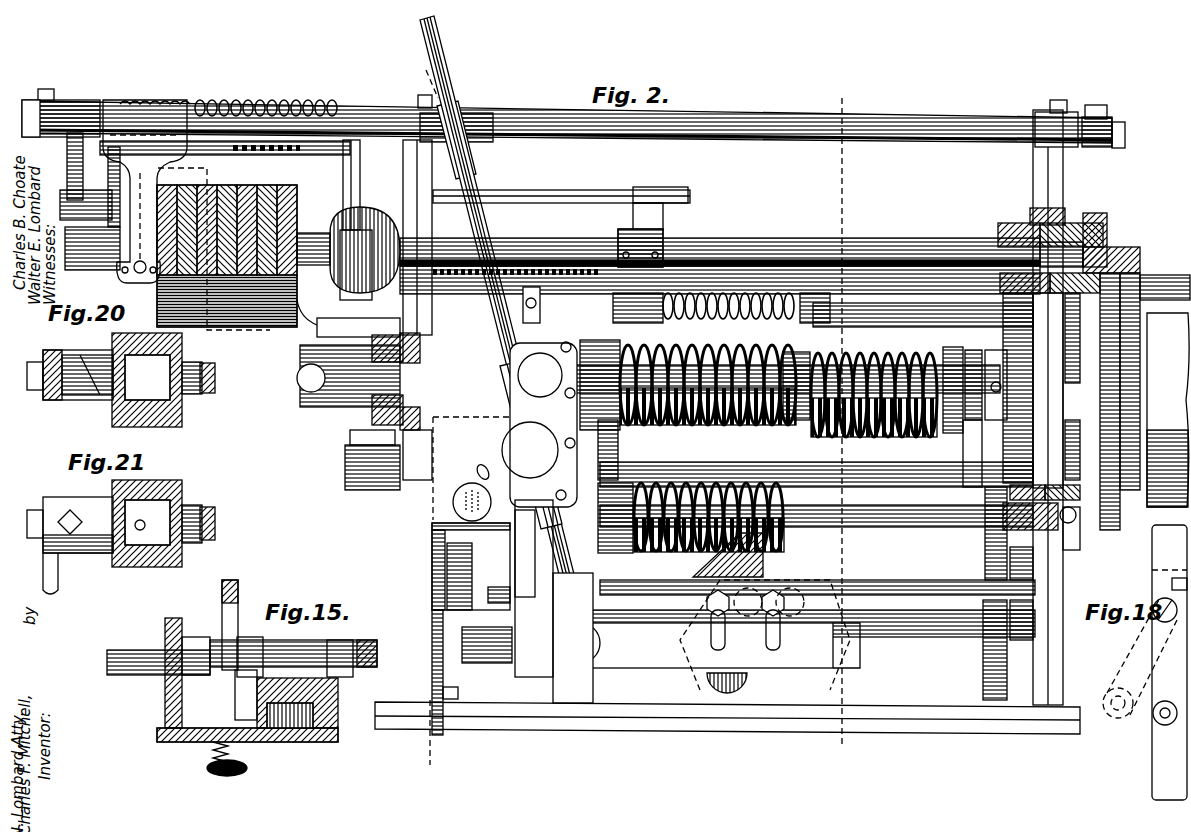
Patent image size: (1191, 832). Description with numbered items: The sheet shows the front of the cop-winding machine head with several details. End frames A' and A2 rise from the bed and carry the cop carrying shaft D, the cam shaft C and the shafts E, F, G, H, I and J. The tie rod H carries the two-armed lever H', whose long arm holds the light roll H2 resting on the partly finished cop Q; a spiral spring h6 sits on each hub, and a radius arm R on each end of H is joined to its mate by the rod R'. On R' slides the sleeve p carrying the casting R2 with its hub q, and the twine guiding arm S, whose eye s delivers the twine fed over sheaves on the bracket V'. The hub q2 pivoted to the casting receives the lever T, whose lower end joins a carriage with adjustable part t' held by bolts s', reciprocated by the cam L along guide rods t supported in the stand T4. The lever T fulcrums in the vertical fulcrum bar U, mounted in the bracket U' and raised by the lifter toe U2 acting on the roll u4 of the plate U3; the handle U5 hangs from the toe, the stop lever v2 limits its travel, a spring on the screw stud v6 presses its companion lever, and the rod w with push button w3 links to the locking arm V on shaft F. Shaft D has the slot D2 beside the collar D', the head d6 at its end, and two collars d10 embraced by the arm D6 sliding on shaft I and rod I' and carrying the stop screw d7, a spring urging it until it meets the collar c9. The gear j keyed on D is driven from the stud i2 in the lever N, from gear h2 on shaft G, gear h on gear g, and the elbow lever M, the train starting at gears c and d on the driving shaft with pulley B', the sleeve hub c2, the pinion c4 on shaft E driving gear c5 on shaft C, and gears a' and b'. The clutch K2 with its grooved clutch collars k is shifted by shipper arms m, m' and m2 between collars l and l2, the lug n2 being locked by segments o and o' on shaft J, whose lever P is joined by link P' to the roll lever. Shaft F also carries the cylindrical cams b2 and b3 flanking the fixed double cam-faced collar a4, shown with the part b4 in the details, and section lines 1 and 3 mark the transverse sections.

In FIG. 2, the tie rod shaft H is at (570, 115).
In FIG. 2, the spiral spring h6 is at (105, 103).
In FIG. 2, the radius arm R is at (58, 109).
In FIG. 2, the connecting rod R' is at (957, 132).
In FIG. 2, the end frame A2 is at (1035, 660).
In FIG. 2, the twine guiding and delivering arm S is at (145, 191).
In FIG. 2, the bolts s' is at (138, 253).
In FIG. 2, the two-armed lever H' is at (90, 180).
In FIG. 2, the slot D2 is at (90, 270).
In FIG. 2, the sleeve p is at (225, 151).
In FIG. 2, the light roll H2 is at (214, 242).
In FIG. 2, the partly finished cop Q is at (270, 185).
In FIG. 2, the collar D' is at (358, 244).
In FIG. 2, the bracket V' is at (348, 318).
In FIG. 2, the link P' is at (347, 292).
In FIG. 2, the end frame A' is at (455, 330).
In FIG. 15, the end frame A' is at (237, 680).
In FIG. 20, the end frame A' is at (160, 378).
In FIG. 21, the end frame A' is at (154, 506).
In FIG. 2, the locking segment o is at (343, 380).
In FIG. 2, the cylindrical cam b2 is at (340, 405).
In FIG. 21, the cylindrical cam b2 is at (70, 506).
In FIG. 2, the cylindrical cam b3 is at (425, 360).
In FIG. 2, the shaft J is at (345, 470).
In FIG. 2, the cylindrical hub q is at (484, 118).
In FIG. 2, the sleeve-like hub q2 is at (467, 140).
In FIG. 2, the casting R2 is at (428, 142).
In FIG. 2, the cylindrical lever T is at (444, 40).
In FIG. 2, the section line 3 is at (424, 420).
In FIG. 2, the section line 1 is at (841, 423).
In FIG. 2, the rod I' is at (561, 185).
In FIG. 2, the arm D6 is at (643, 190).
In FIG. 2, the collars d10 is at (620, 236).
In FIG. 2, the cop carrying shaft D is at (741, 260).
In FIG. 2, the spur gear wheel d is at (531, 300).
In FIG. 2, the head d6 is at (638, 300).
In FIG. 2, the stop screw d7 is at (728, 299).
In FIG. 2, the gear wheel b' is at (833, 303).
In FIG. 2, the shaft I is at (923, 306).
In FIG. 2, the collar c9 is at (579, 301).
In FIG. 2, the gear j is at (1025, 209).
In FIG. 2, the lever N is at (1075, 212).
In FIG. 2, the gear h2 is at (1095, 275).
In FIG. 2, the pulley B' is at (1127, 401).
In FIG. 2, the stud i2 is at (1085, 400).
In FIG. 2, the spur gear wheel c is at (1024, 388).
In FIG. 2, the sleeve-like hub c2 is at (1050, 485).
In FIG. 2, the gear g is at (1076, 508).
In FIG. 2, the elbow lever M is at (1074, 541).
In FIG. 2, the gear h is at (1132, 519).
In FIG. 2, the shaft F is at (780, 360).
In FIG. 20, the shaft F is at (206, 378).
In FIG. 21, the shaft F is at (208, 524).
In FIG. 2, the collar l2 is at (610, 379).
In FIG. 2, the shipper arm m2 is at (710, 342).
In FIG. 2, the shipper arm m' is at (796, 373).
In FIG. 2, the shaft G is at (878, 381).
In FIG. 2, the shipper arm m is at (962, 390).
In FIG. 2, the collar l is at (996, 385).
In FIG. 2, the locking segment o' is at (873, 453).
In FIG. 2, the lug n2 is at (660, 462).
In FIG. 2, the male clutch portion K2 is at (740, 480).
In FIG. 2, the collar k is at (763, 496).
In FIG. 2, the cam L is at (728, 615).
In FIG. 2, the shaft E is at (897, 515).
In FIG. 2, the spur gear wheel a' is at (824, 560).
In FIG. 2, the pinion c4 is at (990, 520).
In FIG. 2, the guide rods t is at (817, 606).
In FIG. 2, the cam shaft C is at (870, 605).
In FIG. 2, the gear wheel c5 is at (985, 650).
In FIG. 2, the carriage part t' is at (725, 645).
In FIG. 2, the twine guiding eye s is at (765, 635).
In FIG. 2, the stand T4 is at (576, 638).
In FIG. 2, the vertical fulcrum bar U is at (539, 505).
In FIG. 15, the vertical fulcrum bar U is at (297, 719).
In FIG. 2, the stand or bracket U' is at (510, 377).
In FIG. 2, the push button w3 is at (466, 492).
In FIG. 2, the screw stud v6 is at (475, 467).
In FIG. 2, the handle U5 is at (440, 592).
In FIG. 2, the stop lever v2 is at (512, 553).
In FIG. 2, the lifter toe U2 is at (497, 620).
In FIG. 18, the plate U3 is at (1169, 662).
In FIG. 18, the roll u4 is at (1155, 718).
In FIG. 15, the lever P is at (242, 644).
In FIG. 15, the locking arm V is at (302, 649).
In FIG. 15, the rod w is at (228, 714).
In FIG. 20, the block b4 is at (70, 375).
In FIG. 20, the double cam-faced cylindrical collar a4 is at (100, 415).
In FIG. 21, the double cam-faced cylindrical collar a4 is at (137, 500).